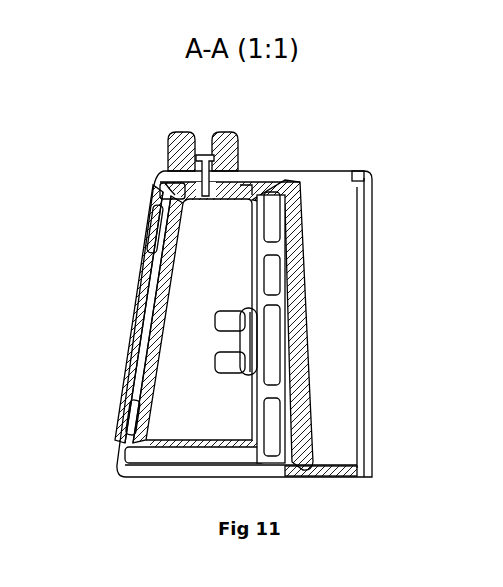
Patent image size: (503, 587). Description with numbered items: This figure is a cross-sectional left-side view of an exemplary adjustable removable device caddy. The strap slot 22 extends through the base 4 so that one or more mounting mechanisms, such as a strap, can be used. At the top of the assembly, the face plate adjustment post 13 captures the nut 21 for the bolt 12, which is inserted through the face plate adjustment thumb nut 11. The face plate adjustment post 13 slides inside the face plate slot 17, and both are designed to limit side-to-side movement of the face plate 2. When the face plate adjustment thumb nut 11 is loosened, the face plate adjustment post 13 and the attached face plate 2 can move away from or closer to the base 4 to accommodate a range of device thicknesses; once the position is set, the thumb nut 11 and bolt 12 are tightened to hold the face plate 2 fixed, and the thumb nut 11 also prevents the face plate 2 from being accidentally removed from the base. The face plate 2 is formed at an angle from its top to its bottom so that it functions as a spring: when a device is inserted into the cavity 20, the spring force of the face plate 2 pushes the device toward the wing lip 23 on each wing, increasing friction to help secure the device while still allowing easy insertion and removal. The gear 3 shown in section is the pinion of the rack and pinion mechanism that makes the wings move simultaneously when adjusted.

The face plate 2 is at (317, 443).
The gear 3 is at (282, 300).
The base 4 is at (112, 470).
The face plate adjustment thumb nut 11 is at (173, 133).
The bolt 12 is at (222, 138).
The face plate adjustment post 13 is at (320, 170).
The face plate slot 17 is at (172, 170).
The cavity 20 is at (367, 208).
The nut 21 is at (290, 177).
The strap slot 22 is at (148, 272).
The wing lip 23 is at (370, 464).